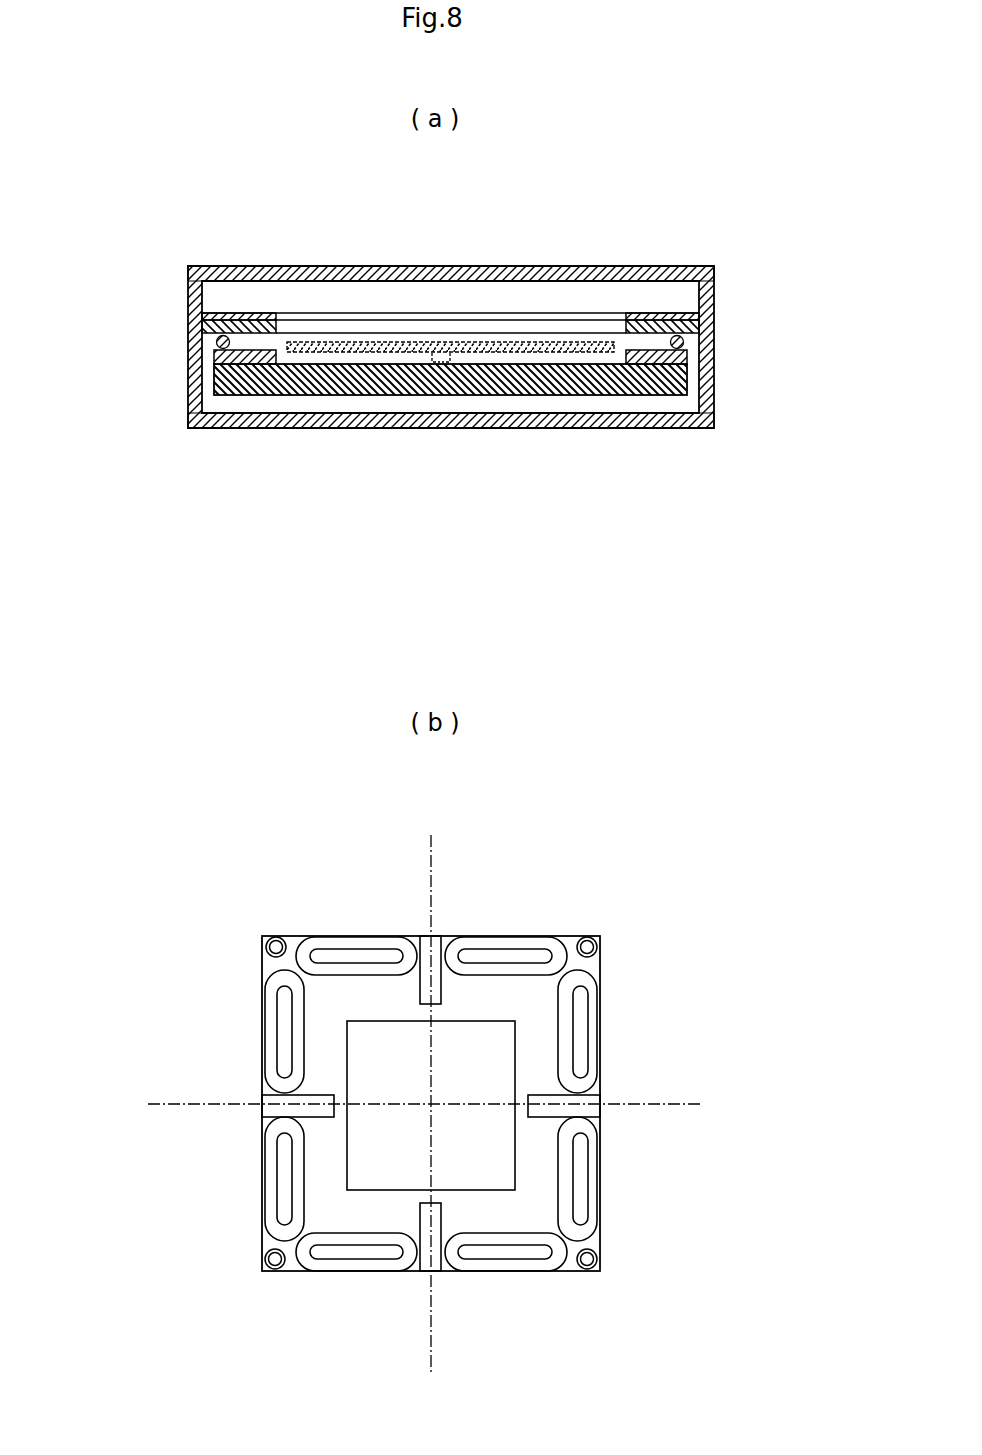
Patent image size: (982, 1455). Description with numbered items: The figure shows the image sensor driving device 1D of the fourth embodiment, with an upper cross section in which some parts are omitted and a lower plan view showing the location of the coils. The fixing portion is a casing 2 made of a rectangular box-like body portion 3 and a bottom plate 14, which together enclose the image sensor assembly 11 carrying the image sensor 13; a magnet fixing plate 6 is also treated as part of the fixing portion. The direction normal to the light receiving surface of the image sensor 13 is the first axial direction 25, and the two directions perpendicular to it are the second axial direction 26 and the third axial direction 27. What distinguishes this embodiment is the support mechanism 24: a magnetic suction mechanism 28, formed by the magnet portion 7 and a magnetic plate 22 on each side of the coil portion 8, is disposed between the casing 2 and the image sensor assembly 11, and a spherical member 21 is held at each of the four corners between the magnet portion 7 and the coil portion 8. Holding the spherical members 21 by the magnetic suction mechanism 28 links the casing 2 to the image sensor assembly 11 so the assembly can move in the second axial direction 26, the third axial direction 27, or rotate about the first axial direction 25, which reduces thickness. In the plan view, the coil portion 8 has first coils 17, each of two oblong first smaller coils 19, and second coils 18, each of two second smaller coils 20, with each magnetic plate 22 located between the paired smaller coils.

The image sensor driving device 1D is at (102, 175).
The casing 2 is at (187, 265).
The body portion 3 is at (283, 268).
The magnet fixing plate 6 is at (405, 315).
The magnet portion 7 is at (215, 322).
The coil portion 8 is at (260, 935).
The image sensor assembly 11 is at (262, 398).
The image sensor 13 is at (549, 345).
The bottom plate 14 is at (628, 428).
The first coil 17 is at (401, 547).
The second coil 18 is at (143, 1062).
The first smaller coil 19 is at (393, 358).
The second smaller coil 20 is at (592, 1135).
The spherical member 21 is at (217, 346).
The magnetic plate 22 is at (452, 357).
The support mechanism 24 is at (783, 315).
The first axial direction 25 is at (85, 258).
The second axial direction 26 is at (697, 1105).
The third axial direction 27 is at (428, 845).
The magnetic suction mechanism 28 is at (217, 338).